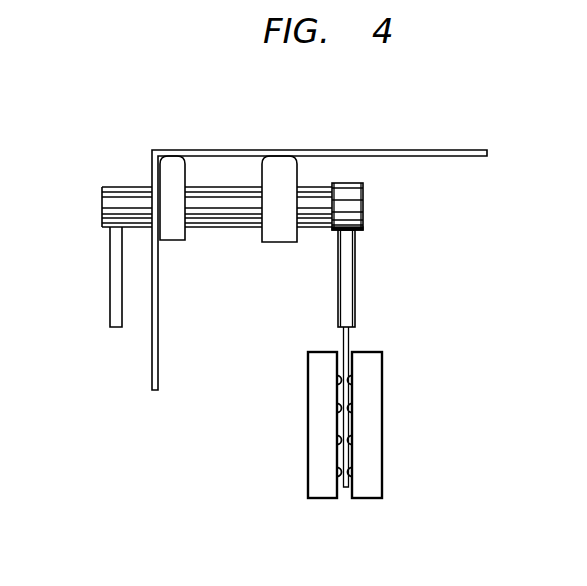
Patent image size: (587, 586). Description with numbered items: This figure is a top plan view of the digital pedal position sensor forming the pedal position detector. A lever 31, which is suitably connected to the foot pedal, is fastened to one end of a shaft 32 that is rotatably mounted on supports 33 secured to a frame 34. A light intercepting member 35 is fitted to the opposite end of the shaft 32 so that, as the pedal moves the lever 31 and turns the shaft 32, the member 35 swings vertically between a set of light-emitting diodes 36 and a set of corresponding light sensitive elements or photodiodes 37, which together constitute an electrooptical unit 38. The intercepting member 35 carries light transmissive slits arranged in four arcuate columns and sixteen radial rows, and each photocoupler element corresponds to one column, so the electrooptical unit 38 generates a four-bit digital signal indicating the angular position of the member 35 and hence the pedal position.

The lever 31 is at (110, 317).
The shaft 32 is at (222, 227).
The supports 33 is at (260, 174).
The frame 34 is at (327, 150).
The light intercepting member 35 is at (350, 340).
The light-emitting diodes 36 is at (333, 472).
The light sensitive elements or photodiodes 37 is at (356, 472).
The electrooptical unit 38 is at (397, 493).